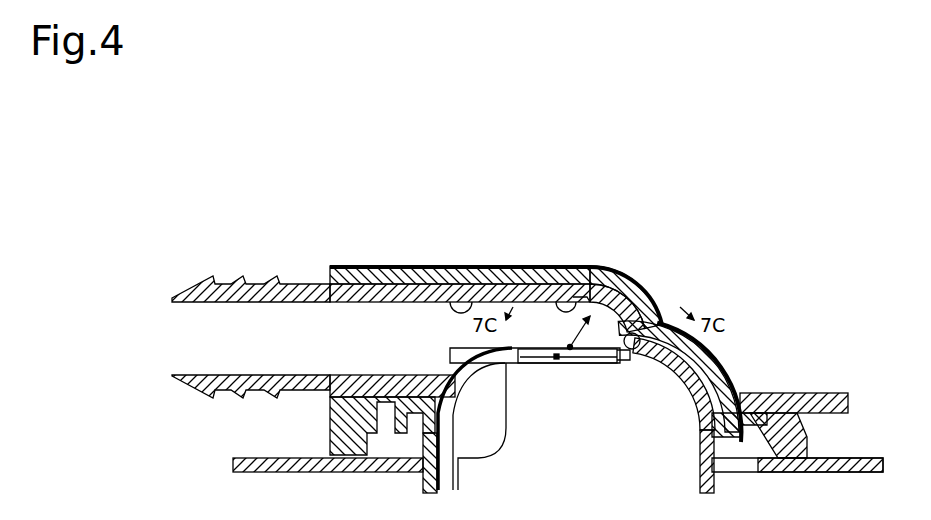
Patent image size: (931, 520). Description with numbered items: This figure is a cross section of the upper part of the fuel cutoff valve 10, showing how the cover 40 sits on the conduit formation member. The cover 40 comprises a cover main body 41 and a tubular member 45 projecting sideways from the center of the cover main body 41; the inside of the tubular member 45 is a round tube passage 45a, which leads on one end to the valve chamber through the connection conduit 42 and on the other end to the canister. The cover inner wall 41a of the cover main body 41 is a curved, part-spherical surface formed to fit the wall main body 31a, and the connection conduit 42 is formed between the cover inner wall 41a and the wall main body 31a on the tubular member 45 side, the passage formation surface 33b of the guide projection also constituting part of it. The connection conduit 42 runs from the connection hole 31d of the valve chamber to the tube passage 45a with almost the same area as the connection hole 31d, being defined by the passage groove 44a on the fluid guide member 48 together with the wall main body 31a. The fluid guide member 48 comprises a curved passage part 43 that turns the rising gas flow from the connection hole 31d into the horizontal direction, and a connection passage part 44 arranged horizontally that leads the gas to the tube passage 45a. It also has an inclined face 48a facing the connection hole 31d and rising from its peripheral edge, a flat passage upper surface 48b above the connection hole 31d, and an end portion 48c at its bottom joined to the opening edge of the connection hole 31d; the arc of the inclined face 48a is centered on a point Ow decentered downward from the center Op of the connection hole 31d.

The fuel cutoff valve 10 is at (878, 207).
The tube passage 45a is at (242, 301).
The tubular member 45 is at (353, 267).
The connection passage part 44 is at (540, 322).
The curved passage part 43 is at (547, 300).
The connection conduit 42 is at (520, 320).
The passage groove 44a is at (447, 268).
The fluid guide member 48 is at (758, 176).
The passage upper surface 48b is at (590, 292).
The inclined face 48a is at (600, 300).
The end portion 48c is at (630, 305).
The cover 40 is at (667, 320).
The cover inner wall 41a is at (658, 322).
The cover main body 41 is at (743, 392).
The wall main body 31a is at (647, 365).
The connection hole 31d is at (528, 363).
The passage formation surface 33b is at (453, 350).
The center of the arc of the inclined face Ow is at (557, 360).
The center of the connection hole Op is at (571, 349).